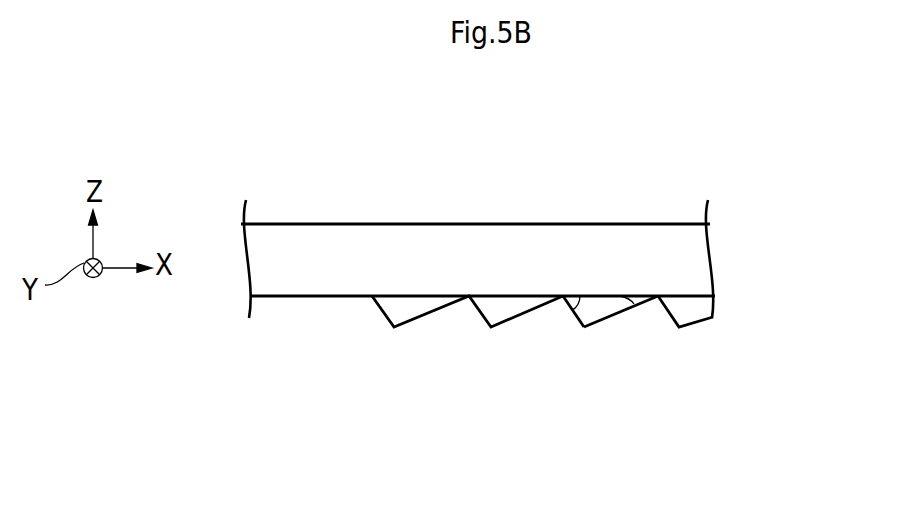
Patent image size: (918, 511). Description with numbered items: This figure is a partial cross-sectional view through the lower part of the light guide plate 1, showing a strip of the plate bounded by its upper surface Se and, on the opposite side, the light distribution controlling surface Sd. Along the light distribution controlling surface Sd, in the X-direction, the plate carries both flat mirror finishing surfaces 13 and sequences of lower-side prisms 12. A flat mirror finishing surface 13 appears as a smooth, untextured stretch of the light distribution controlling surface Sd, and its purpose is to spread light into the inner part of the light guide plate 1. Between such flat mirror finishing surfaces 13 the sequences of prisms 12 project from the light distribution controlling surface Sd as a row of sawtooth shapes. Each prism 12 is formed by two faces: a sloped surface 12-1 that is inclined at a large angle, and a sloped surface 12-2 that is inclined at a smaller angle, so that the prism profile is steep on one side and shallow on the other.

The light guide plate 1 is at (348, 170).
The light emitting surface Se is at (489, 224).
The light distribution controlling surface Sd is at (365, 322).
The flat mirror finishing surface 13 is at (411, 296).
The lower-side prism 12 is at (554, 327).
The sloped surface with large angle 12-1 is at (577, 314).
The sloped surface with small angle 12-2 is at (613, 316).